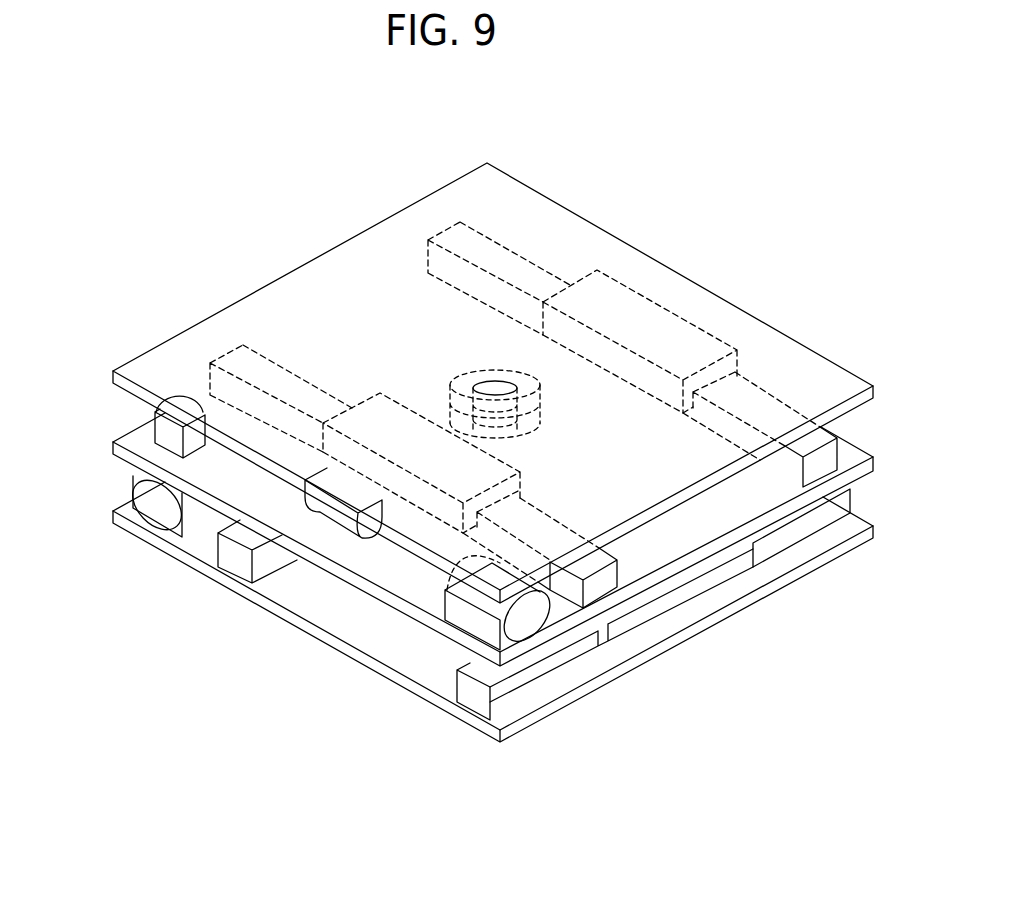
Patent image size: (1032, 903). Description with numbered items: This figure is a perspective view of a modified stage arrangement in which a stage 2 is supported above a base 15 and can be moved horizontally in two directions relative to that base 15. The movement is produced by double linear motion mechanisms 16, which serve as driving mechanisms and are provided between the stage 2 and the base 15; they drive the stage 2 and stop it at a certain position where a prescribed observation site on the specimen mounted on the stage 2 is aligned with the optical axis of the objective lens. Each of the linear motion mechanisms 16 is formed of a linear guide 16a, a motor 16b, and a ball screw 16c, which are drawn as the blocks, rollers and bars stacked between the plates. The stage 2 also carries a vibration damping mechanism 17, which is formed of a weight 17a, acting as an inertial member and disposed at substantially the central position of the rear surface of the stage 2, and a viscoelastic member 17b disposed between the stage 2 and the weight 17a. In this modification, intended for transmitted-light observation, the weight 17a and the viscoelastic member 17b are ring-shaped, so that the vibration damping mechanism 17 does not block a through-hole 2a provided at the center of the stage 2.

The stage 2 is at (230, 308).
The through-hole 2a is at (490, 385).
The base 15 is at (543, 725).
The linear motion mechanism 16 is at (300, 603).
The linear guide 16a is at (310, 380).
The motor 16b is at (142, 490).
The ball screw 16c is at (233, 437).
The vibration damping mechanism 17 is at (557, 418).
The weight 17a is at (528, 437).
The viscoelastic member 17b is at (538, 401).